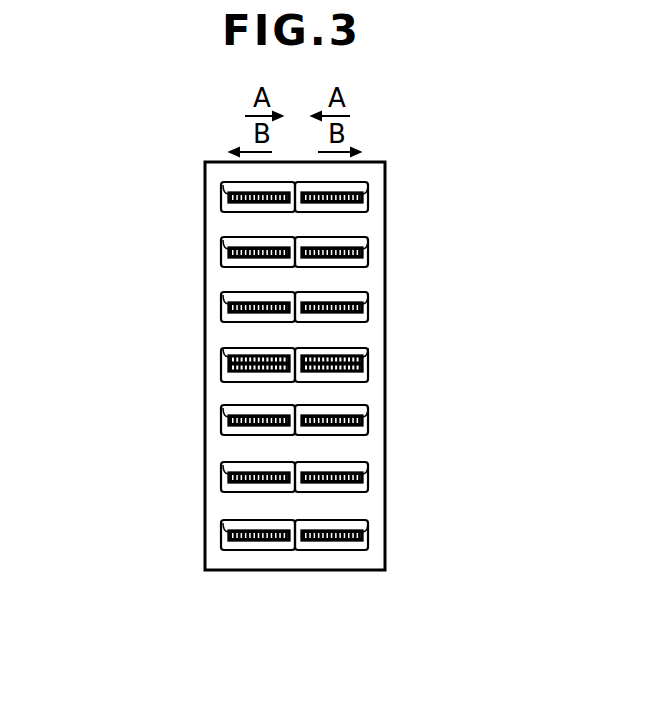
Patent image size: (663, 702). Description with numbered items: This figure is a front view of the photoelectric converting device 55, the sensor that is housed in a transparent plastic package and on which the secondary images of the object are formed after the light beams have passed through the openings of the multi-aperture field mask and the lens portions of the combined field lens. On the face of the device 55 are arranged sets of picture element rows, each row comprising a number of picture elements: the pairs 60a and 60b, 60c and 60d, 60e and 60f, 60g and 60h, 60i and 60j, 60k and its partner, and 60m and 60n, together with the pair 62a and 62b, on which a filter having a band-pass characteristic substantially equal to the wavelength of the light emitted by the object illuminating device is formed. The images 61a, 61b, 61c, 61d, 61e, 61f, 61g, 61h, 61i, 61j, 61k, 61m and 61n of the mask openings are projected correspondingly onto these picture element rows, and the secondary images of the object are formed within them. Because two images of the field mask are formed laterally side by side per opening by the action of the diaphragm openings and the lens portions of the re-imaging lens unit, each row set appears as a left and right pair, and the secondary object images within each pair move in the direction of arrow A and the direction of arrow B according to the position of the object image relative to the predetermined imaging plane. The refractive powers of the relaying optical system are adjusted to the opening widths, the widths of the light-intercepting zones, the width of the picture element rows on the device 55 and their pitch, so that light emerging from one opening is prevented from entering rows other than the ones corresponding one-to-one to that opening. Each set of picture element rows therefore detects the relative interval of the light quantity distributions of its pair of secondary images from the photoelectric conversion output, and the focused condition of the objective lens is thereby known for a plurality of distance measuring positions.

The photoelectric converting device 55 is at (385, 572).
The picture element row 60a is at (221, 525).
The picture element row 60b is at (368, 525).
The picture element row 60c is at (221, 467).
The picture element row 60d is at (368, 467).
The picture element row 60e is at (221, 410).
The picture element row 60f is at (368, 410).
The picture element row 60g is at (221, 365).
The picture element row 60h is at (368, 365).
The picture element row 60i is at (221, 297).
The picture element row 60j is at (368, 297).
The picture element row 60k is at (221, 242).
The picture element row 60m is at (221, 187).
The picture element row 60n is at (368, 187).
The image of opening 61a is at (221, 544).
The image of opening 61b is at (368, 544).
The image of opening 61c is at (221, 486).
The image of opening 61d is at (368, 486).
The image of opening 61e is at (221, 429).
The image of opening 61f is at (368, 429).
The image of opening 61g is at (221, 378).
The image of opening 61h is at (368, 378).
The image of opening 61i is at (221, 316).
The image of opening 61j is at (368, 316).
The image of opening 61k is at (221, 261).
The image of opening 61m is at (221, 206).
The image of opening 61n is at (368, 206).
The picture element row 62a is at (221, 353).
The picture element row 62b is at (368, 353).